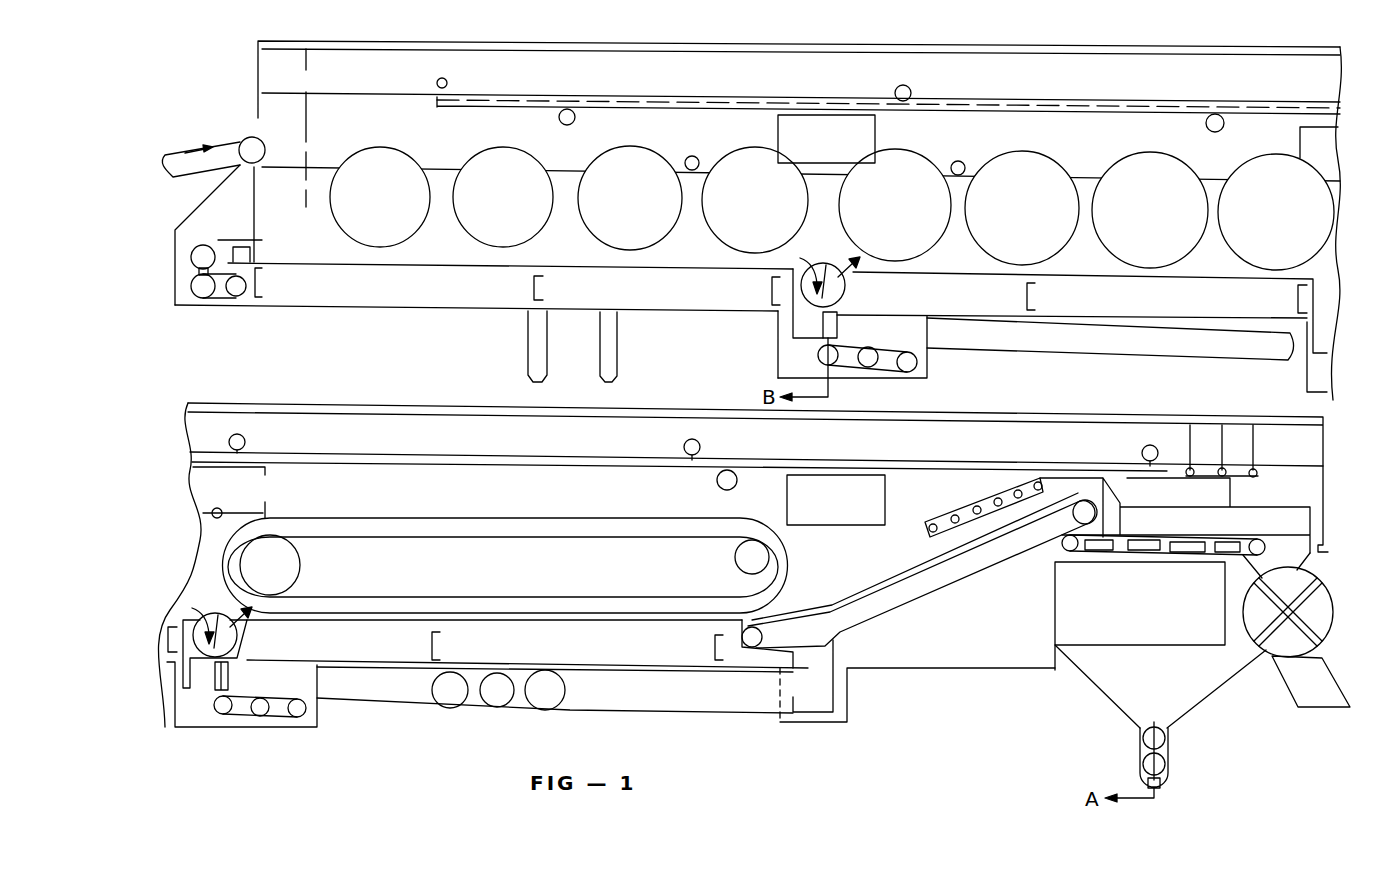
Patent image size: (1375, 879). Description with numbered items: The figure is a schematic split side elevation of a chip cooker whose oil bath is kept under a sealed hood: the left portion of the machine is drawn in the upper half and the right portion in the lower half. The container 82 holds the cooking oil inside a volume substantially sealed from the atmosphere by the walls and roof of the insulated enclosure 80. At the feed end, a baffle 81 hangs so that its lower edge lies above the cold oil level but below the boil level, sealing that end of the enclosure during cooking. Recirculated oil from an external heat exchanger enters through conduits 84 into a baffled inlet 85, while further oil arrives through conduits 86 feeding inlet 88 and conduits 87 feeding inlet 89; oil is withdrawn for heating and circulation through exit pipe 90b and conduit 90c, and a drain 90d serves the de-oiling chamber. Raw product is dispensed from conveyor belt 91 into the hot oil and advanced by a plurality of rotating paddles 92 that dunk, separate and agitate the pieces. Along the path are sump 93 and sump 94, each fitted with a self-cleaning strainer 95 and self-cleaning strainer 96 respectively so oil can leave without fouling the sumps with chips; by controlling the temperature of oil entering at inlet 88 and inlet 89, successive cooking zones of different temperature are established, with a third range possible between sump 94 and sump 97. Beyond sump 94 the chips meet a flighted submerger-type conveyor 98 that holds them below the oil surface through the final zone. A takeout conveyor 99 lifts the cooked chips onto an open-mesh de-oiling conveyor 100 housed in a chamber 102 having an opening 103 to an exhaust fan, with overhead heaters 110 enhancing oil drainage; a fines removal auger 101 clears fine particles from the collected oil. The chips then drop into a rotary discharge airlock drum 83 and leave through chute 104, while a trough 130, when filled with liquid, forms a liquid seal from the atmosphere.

The insulated enclosure 80 is at (292, 37).
The baffle 81 is at (310, 100).
The container 82 is at (323, 265).
The rotary discharge airlock drum 83 is at (1320, 595).
The conduits 84 is at (202, 300).
The baffled inlet 85 is at (262, 245).
The conduits 86 is at (838, 392).
The conduits 87 is at (298, 717).
The inlet 88 is at (862, 315).
The inlet 89 is at (207, 692).
The exit pipe 90b is at (1012, 350).
The conduit 90c is at (708, 714).
The drain 90d is at (1146, 784).
The conveyor belt 91 is at (185, 150).
The rotating paddles 92 is at (380, 147).
The sump 93 is at (771, 298).
The sump 94 is at (170, 632).
The self-cleaning strainer 95 is at (822, 265).
The self-cleaning strainer 96 is at (213, 618).
The sump 97 is at (800, 652).
The flighted submerger-type conveyor 98 is at (330, 608).
The takeout conveyor 99 is at (838, 604).
The de-oiling conveyor 100 is at (1103, 496).
The fines removal auger 101 is at (1166, 746).
The chamber 102 is at (1160, 686).
The opening 103 is at (1140, 616).
The chute 104 is at (1290, 688).
The overhead heaters 110 is at (1018, 490).
The trough 130 is at (1324, 551).